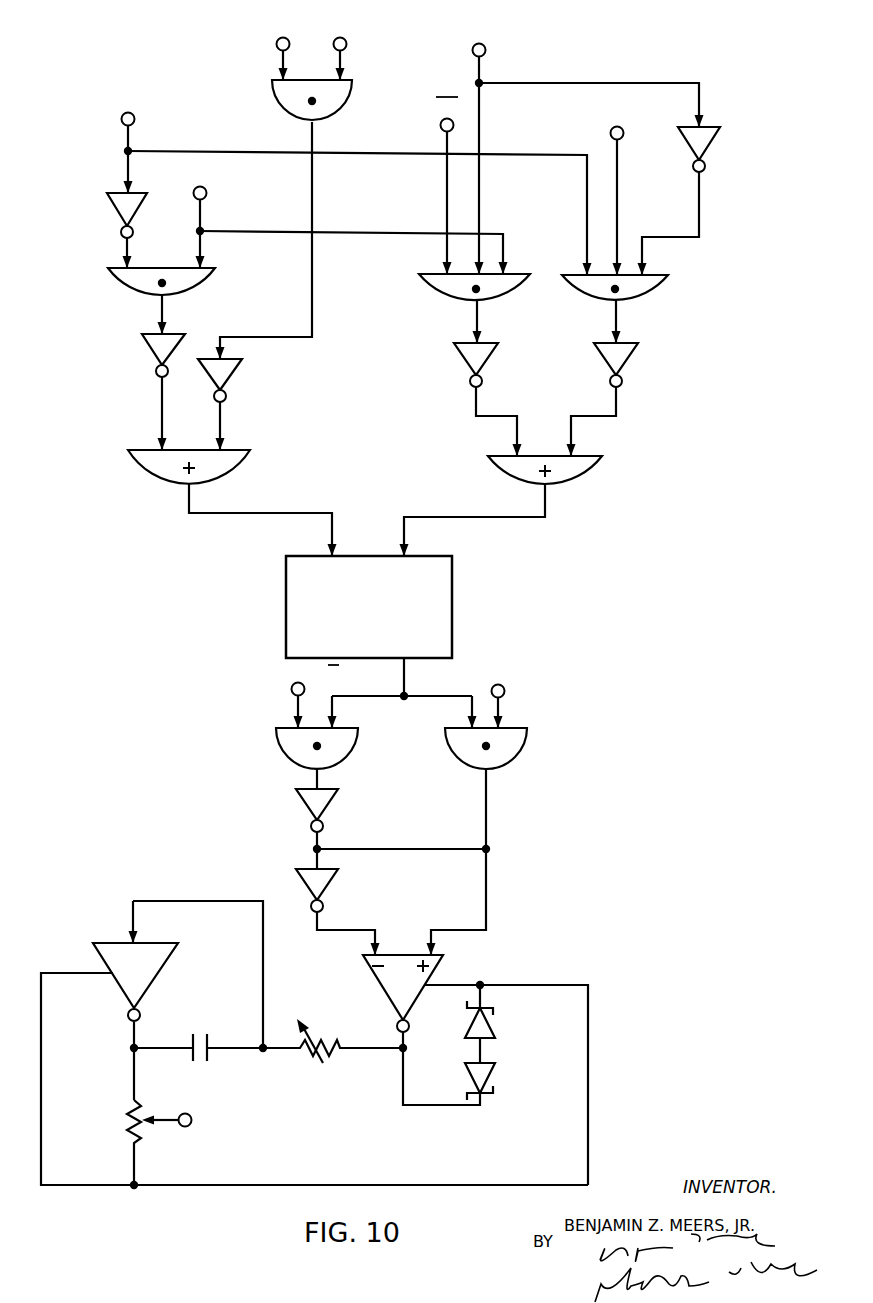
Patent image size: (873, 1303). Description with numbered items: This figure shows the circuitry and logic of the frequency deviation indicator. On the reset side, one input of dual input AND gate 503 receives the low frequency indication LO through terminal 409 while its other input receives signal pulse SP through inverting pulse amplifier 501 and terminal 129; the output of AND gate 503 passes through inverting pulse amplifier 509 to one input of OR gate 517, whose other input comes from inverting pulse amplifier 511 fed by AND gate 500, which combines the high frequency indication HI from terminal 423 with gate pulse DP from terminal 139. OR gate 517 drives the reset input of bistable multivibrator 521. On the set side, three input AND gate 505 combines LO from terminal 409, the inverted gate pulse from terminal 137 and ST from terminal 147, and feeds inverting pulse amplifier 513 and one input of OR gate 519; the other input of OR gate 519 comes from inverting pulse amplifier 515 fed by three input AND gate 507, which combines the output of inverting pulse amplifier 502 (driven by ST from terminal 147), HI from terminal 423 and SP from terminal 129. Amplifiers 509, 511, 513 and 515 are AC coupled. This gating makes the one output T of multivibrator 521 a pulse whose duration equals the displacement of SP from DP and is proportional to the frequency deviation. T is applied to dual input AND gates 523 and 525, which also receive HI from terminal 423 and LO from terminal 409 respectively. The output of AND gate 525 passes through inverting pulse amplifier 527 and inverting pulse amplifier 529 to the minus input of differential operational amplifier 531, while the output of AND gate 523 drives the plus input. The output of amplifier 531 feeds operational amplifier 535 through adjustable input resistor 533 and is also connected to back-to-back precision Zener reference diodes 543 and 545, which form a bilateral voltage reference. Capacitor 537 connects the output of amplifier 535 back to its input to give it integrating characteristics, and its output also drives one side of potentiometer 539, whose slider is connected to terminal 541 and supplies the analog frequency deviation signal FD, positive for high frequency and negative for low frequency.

The terminal 139 is at (276, 47).
The terminal 423 is at (347, 47).
The terminal 147 is at (486, 53).
The terminal 129 is at (135, 122).
The terminal 137 is at (440, 128).
The terminal 409 is at (207, 197).
The AND gate 500 is at (282, 102).
The inverting pulse amplifier 501 is at (119, 203).
The inverting pulse amplifier 502 is at (710, 146).
The AND gate 503 is at (130, 280).
The AND gate 505 is at (442, 280).
The AND gate 507 is at (648, 283).
The inverting pulse amplifier 509 is at (157, 346).
The inverting pulse amplifier 511 is at (216, 372).
The inverting pulse amplifier 513 is at (470, 355).
The inverting pulse amplifier 515 is at (622, 355).
The OR gate 517 is at (228, 464).
The OR gate 519 is at (584, 470).
The bistable multivibrator 521 is at (440, 590).
The AND gate 523 is at (506, 744).
The AND gate 525 is at (290, 744).
The inverting pulse amplifier 527 is at (304, 801).
The inverting pulse amplifier 529 is at (302, 884).
The differential input operational amplifier 531 is at (386, 981).
The adjustable input resistor 533 is at (330, 1056).
The operational amplifier 535 is at (113, 957).
The capacitor 537 is at (210, 1052).
The potentiometer 539 is at (142, 1140).
The terminal 541 is at (183, 1113).
The precision Zener reference diode 543 is at (480, 1030).
The precision Zener reference diode 545 is at (486, 1091).